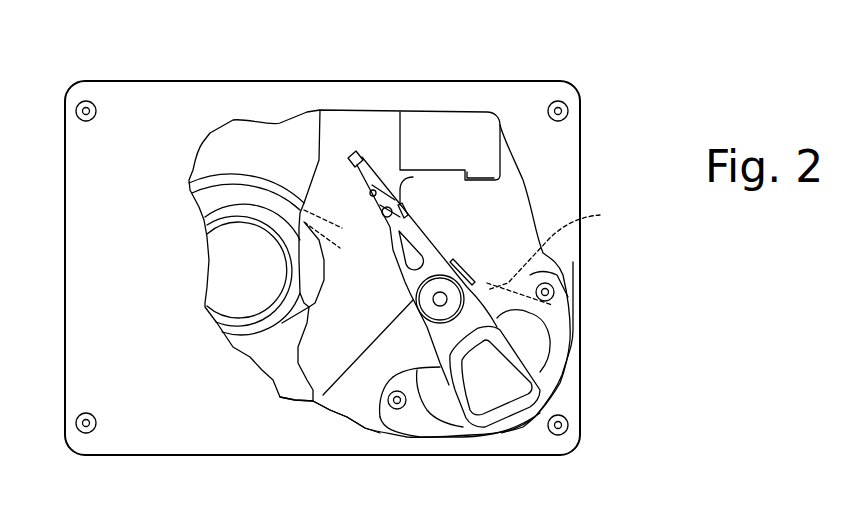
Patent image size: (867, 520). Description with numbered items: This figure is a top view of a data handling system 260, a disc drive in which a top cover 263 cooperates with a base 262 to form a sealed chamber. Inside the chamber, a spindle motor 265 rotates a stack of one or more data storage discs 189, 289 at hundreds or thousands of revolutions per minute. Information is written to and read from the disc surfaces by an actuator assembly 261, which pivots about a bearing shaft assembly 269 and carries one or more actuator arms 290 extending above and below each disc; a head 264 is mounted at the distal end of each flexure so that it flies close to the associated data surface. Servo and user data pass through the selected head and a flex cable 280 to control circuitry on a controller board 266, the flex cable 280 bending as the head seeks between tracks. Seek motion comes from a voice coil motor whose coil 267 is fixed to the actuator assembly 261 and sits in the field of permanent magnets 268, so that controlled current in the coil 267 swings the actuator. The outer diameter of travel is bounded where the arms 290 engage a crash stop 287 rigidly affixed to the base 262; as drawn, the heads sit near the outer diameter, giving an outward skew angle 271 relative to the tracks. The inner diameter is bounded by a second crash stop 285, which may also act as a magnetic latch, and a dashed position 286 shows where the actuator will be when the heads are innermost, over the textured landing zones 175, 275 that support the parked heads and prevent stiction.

The data handling system 260 is at (632, 84).
The base 262 is at (522, 193).
The top cover 263 is at (77, 148).
The head 264 is at (360, 150).
The spindle motor 265 is at (235, 262).
The controller board 266 is at (462, 135).
The coil 267 is at (540, 390).
The permanent magnets 268 is at (530, 318).
The bearing shaft assembly 269 is at (438, 300).
The outward skew angle 271 is at (350, 157).
The textured landing zone 275 is at (253, 348).
The flex cable 280 is at (447, 250).
The crash stop 285 is at (548, 288).
The position 286 is at (564, 254).
The crash stop 287 is at (407, 207).
The data storage disc 289 is at (282, 377).
The actuator arms 290 is at (395, 261).
The textured landing zone 175 is at (317, 315).
The data storage disc 189 is at (317, 397).
The actuator assembly 261 is at (405, 282).